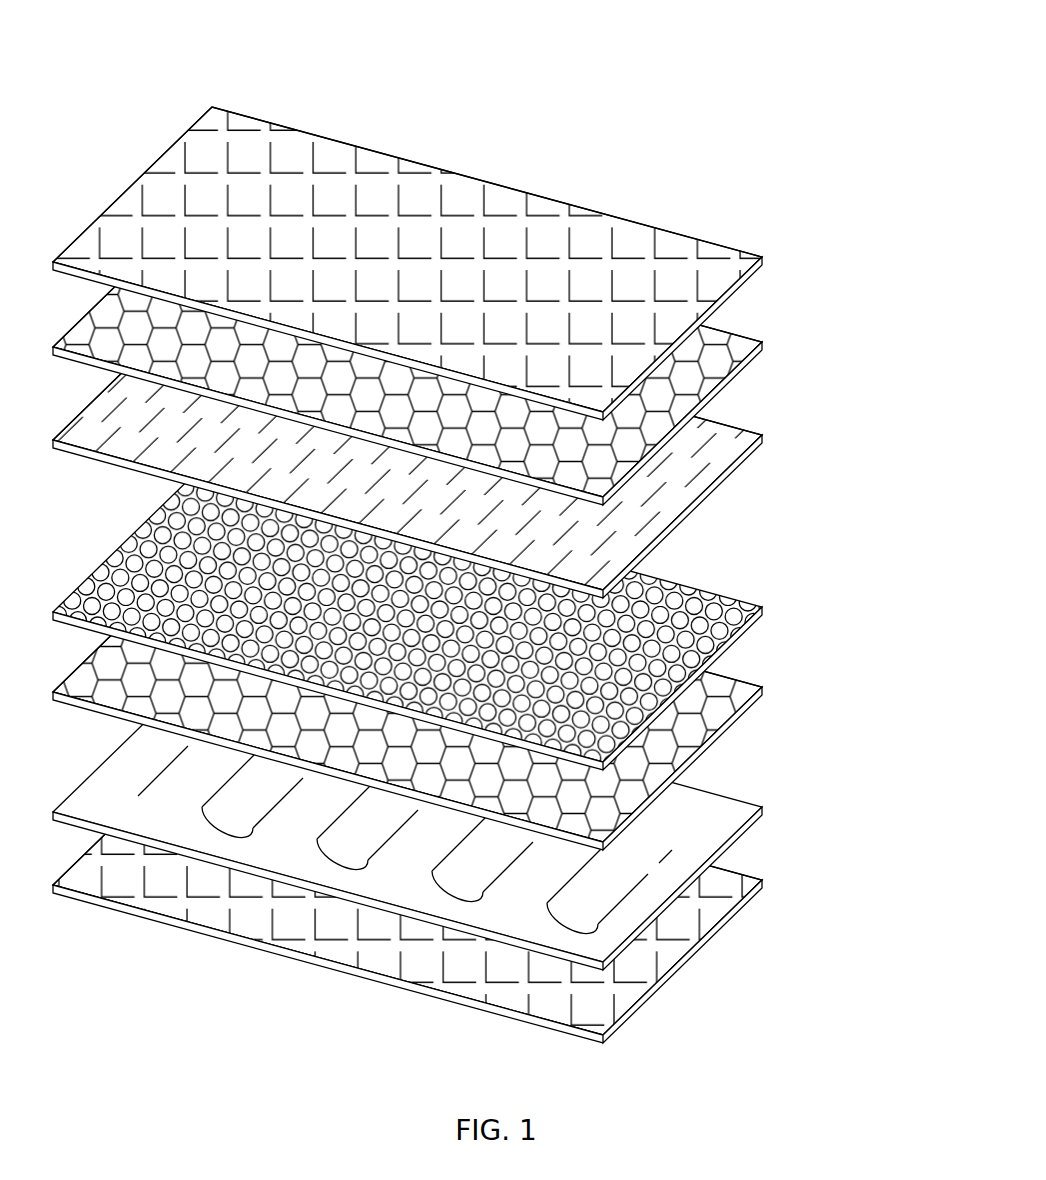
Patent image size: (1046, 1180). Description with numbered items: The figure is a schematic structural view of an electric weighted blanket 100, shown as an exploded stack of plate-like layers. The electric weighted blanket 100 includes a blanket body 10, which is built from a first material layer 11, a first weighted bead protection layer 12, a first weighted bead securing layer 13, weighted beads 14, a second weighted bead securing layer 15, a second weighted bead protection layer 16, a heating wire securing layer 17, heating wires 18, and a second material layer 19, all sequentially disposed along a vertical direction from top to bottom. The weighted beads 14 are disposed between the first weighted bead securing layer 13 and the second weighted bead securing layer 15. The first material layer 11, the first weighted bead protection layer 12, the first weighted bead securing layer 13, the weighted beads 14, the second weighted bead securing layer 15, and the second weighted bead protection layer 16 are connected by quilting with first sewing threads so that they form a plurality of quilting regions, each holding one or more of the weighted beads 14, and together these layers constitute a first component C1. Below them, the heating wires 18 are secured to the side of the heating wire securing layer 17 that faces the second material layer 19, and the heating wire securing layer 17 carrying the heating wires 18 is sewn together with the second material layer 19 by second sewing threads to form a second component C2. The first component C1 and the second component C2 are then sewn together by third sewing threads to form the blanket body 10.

The electric weighted blanket 100 is at (430, 47).
The blanket body 10 is at (603, 178).
The first material layer 11 is at (665, 268).
The first weighted bead protection layer 12 is at (712, 350).
The first weighted bead securing layer 13 is at (700, 447).
The weighted beads 14 is at (693, 590).
The second weighted bead securing layer 15 is at (747, 608).
The second weighted bead protection layer 16 is at (700, 673).
The heating wire securing layer 17 is at (752, 802).
The heating wires 18 is at (708, 828).
The second material layer 19 is at (720, 888).
The first component C1 is at (797, 224).
The second component C2 is at (828, 776).